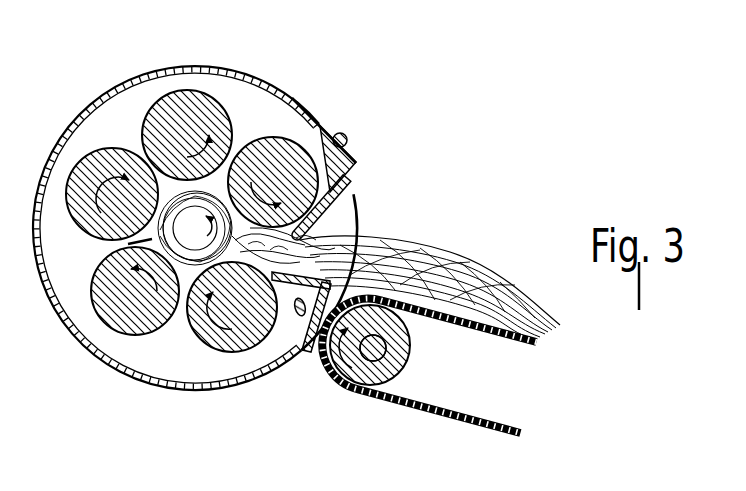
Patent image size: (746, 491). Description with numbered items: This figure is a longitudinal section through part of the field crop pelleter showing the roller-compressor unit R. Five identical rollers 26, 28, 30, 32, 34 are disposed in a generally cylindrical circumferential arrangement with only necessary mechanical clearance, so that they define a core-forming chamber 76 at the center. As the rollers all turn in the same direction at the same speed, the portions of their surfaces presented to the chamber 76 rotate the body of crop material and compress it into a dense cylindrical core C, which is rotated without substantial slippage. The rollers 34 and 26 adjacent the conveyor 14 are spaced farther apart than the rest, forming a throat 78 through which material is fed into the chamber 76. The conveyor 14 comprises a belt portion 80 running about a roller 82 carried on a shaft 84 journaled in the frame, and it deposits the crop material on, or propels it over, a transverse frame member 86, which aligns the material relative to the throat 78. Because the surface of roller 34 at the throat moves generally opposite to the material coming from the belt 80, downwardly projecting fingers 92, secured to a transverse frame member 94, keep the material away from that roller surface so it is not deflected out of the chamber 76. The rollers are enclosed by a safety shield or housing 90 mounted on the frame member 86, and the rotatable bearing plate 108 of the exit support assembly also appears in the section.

The conveyor 14 is at (480, 296).
The roller 26 is at (221, 350).
The roller 28 is at (141, 335).
The roller 30 is at (110, 150).
The roller 32 is at (152, 112).
The roller 34 is at (289, 138).
The core-forming chamber 76 is at (142, 242).
The throat 78 is at (283, 246).
The belt portion 80 is at (531, 347).
The roller 82 is at (411, 343).
The shaft 84 is at (386, 352).
The transverse frame member 86 is at (306, 352).
The safety shield or housing 90 is at (279, 90).
The fingers 92 is at (345, 210).
The transverse frame member 94 is at (353, 162).
The bearing plate 108 is at (224, 80).
The roller-compressor unit R is at (345, 110).
The core C is at (195, 228).